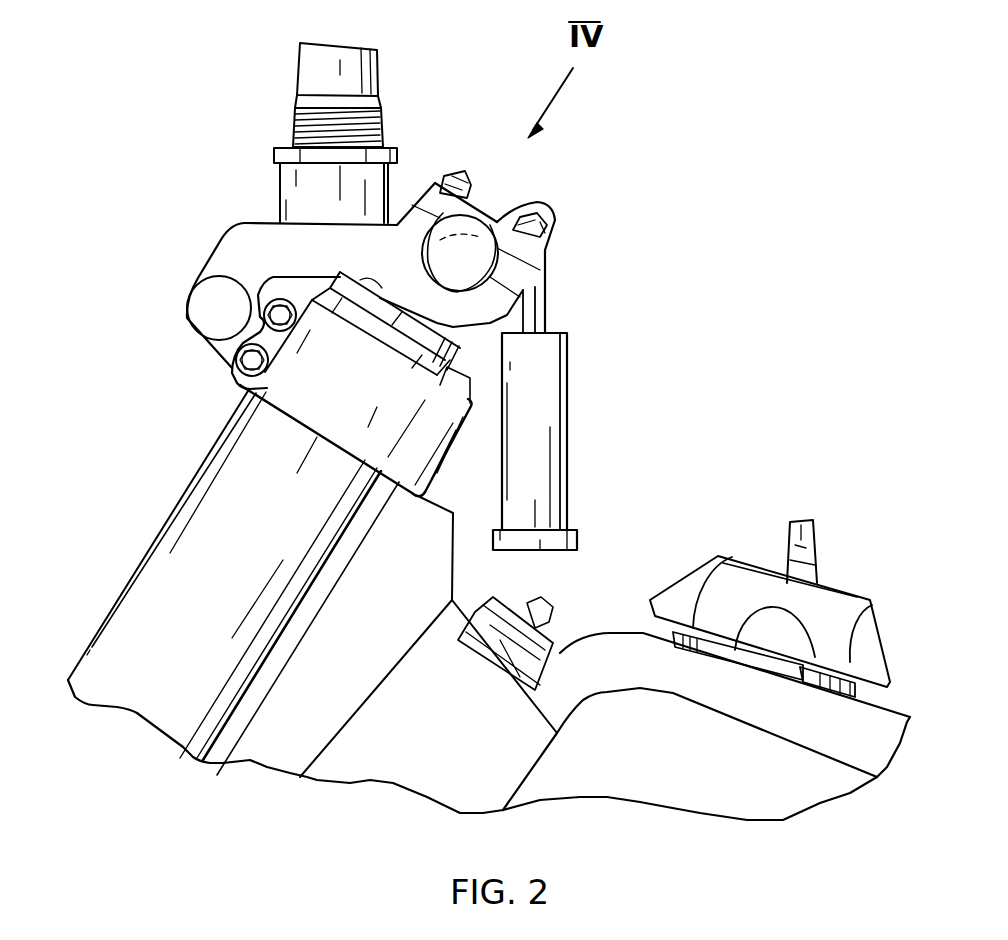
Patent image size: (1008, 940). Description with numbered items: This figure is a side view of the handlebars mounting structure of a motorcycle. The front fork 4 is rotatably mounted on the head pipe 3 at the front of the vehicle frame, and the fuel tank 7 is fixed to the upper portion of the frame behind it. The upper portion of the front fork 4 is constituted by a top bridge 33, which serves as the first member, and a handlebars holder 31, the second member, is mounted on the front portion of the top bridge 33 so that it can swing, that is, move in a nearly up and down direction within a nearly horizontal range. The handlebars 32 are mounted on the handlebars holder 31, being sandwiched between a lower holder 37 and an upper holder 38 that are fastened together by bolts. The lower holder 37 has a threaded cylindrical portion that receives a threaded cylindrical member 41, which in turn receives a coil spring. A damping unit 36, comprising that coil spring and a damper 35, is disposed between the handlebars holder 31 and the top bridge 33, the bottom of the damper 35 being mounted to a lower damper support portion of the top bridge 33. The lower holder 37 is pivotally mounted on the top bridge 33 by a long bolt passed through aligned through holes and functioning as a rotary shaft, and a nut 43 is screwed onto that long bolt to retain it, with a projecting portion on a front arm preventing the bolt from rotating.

The head pipe 3 is at (437, 573).
The front fork 4 is at (128, 585).
The fuel tank 7 is at (615, 635).
The handlebars holder 31 is at (238, 224).
The handlebars 32 is at (528, 272).
The top bridge 33 is at (293, 405).
The damper 35 is at (560, 420).
The damping unit 36 is at (568, 367).
The lower holder 37 is at (235, 258).
The upper holder 38 is at (427, 200).
The cylindrical member 41 is at (297, 73).
The nut 43 is at (275, 153).